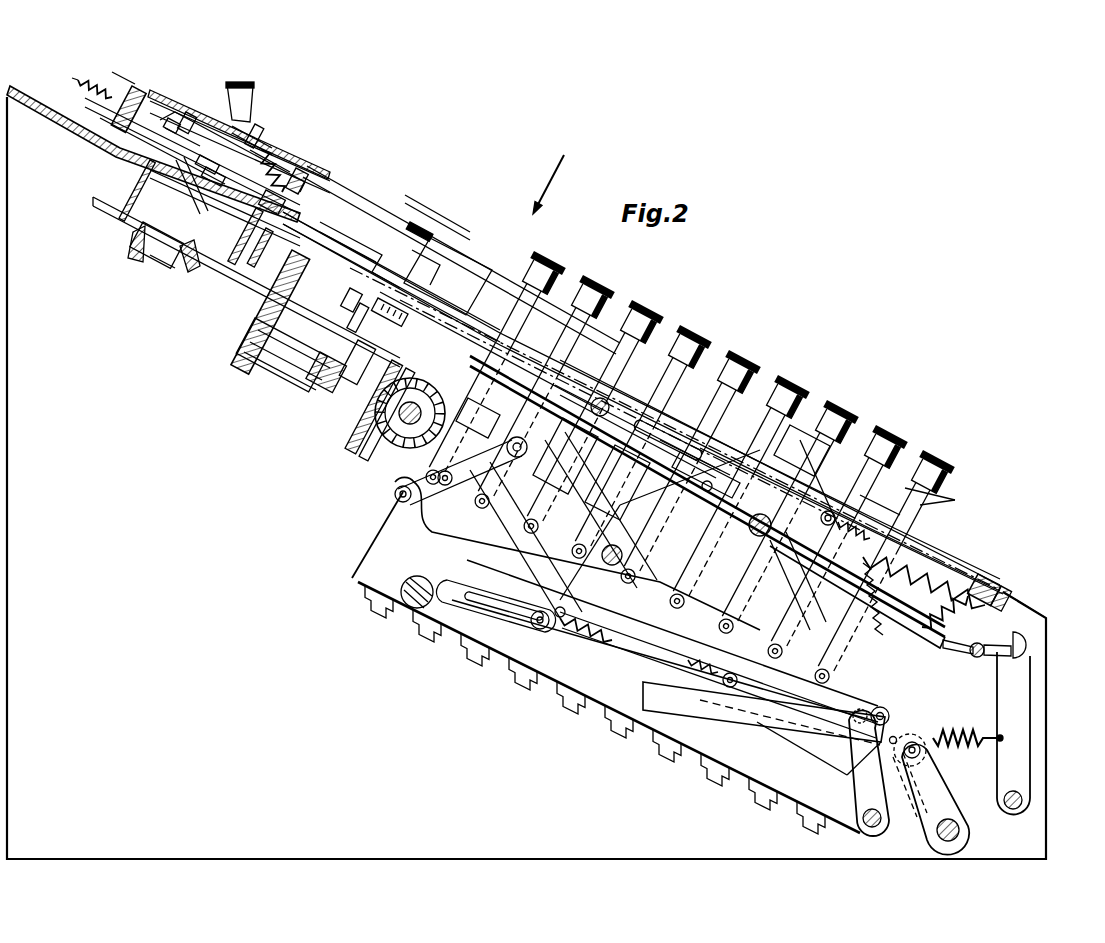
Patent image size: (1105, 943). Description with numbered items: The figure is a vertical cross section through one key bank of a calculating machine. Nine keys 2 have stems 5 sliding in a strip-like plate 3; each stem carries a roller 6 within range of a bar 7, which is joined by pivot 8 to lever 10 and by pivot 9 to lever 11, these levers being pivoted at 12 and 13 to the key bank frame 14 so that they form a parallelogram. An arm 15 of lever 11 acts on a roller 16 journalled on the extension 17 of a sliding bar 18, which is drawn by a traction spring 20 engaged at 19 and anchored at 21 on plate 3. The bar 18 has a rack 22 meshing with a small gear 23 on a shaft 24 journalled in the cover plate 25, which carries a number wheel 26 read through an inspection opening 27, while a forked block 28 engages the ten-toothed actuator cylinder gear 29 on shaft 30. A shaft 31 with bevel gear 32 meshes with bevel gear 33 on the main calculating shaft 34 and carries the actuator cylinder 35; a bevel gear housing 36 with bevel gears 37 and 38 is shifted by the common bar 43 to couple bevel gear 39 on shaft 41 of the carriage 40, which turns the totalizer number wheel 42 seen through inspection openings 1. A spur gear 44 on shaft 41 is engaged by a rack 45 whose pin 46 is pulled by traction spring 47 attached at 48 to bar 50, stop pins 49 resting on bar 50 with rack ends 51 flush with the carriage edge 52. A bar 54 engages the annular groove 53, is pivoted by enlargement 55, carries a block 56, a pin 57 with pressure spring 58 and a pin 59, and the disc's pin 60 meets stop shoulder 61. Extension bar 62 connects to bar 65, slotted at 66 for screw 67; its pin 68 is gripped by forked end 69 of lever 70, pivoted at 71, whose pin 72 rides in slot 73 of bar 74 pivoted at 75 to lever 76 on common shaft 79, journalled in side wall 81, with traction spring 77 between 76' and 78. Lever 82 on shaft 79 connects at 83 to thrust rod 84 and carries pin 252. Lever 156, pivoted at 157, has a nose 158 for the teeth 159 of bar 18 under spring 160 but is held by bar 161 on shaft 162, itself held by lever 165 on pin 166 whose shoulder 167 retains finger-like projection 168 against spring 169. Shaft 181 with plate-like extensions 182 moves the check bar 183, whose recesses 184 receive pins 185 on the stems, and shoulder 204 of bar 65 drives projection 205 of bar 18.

The inspection openings 1 is at (266, 140).
The keys 2 is at (938, 452).
The strip-like plate 3 is at (910, 543).
The key stems 5 is at (936, 497).
The roller 6 is at (452, 478).
The bar 7 is at (530, 596).
The pivot 8 is at (840, 735).
The pivot 9 is at (394, 495).
The lever 10 is at (858, 782).
The lever 11 is at (400, 532).
The pivot 12 is at (862, 820).
The pivot 13 is at (408, 605).
The frame 14 is at (612, 708).
The arm 15 is at (518, 480).
The roller 16 is at (506, 450).
The extension 17 is at (548, 446).
The bar 18 is at (822, 492).
The spring attachment point 19 is at (829, 510).
The traction spring 20 is at (868, 520).
The spring attachment point 21 is at (985, 580).
The rack 22 is at (440, 296).
The small gear 23 is at (378, 256).
The shaft 24 is at (418, 268).
The cover plate 25 is at (367, 199).
The number wheel 26 is at (455, 240).
The inspection opening 27 is at (416, 222).
The forked block 28 is at (356, 302).
The actuator cylinder gear 29 is at (326, 376).
The shaft 30 is at (240, 276).
The shaft 31 is at (352, 378).
The bevel gear 32 is at (366, 438).
The bevel gear 33 is at (372, 462).
The main calculating shaft 34 is at (404, 432).
The actuator cylinders 35 is at (272, 368).
The bevel gear housing 36 is at (170, 262).
The bevel gear 37 is at (190, 272).
The bevel gear 38 is at (134, 250).
The bevel gear 39 is at (158, 205).
The carriage 40 is at (170, 99).
The shaft 41 is at (186, 196).
The number wheel 42 is at (250, 133).
The common bar 43 is at (155, 262).
The spur gear 44 is at (257, 104).
The rack 45 is at (97, 117).
The pin 46 is at (76, 80).
The traction spring 47 is at (127, 71).
The spring attachment point 48 is at (140, 92).
The stop pins 49 is at (60, 112).
The bar 50 is at (172, 92).
The rack ends 51 is at (262, 222).
The longitudinal edge 52 is at (306, 175).
The annular groove 53 is at (214, 180).
The bar 54 is at (143, 156).
The enlargement 55 is at (137, 133).
The small block 56 is at (262, 228).
The pin 57 is at (290, 180).
The pressure spring 58 is at (278, 152).
The pin 59 is at (268, 158).
The pin 60 is at (198, 118).
The stop shoulder 61 is at (176, 132).
The extension bar 62 is at (310, 226).
The bar 65 is at (536, 352).
The slot 66 is at (688, 450).
The attaching screw 67 is at (608, 403).
The pin 68 is at (728, 475).
The forked end 69 is at (707, 491).
The lever 70 is at (680, 500).
The pin 71 is at (624, 555).
The pin 72 is at (536, 630).
The slot 73 is at (480, 597).
The bar 74 is at (618, 650).
The pivot 75 is at (921, 752).
The lever 76 is at (943, 800).
The spring attachment point 76' is at (549, 657).
The traction spring 77 is at (588, 640).
The spring attachment point 78 is at (726, 690).
The common shaft 79 is at (962, 832).
The frame side wall 81 is at (1022, 612).
The lever 82 is at (910, 805).
The connection point 83 is at (888, 711).
The thrust rod 84 is at (736, 722).
The lever 156 is at (796, 558).
The pivot 157 is at (760, 534).
The nose 158 is at (850, 580).
The teeth 159 is at (930, 580).
The traction spring 160 is at (1010, 590).
The bar 161 is at (955, 641).
The shaft 162 is at (982, 645).
The lever 165 is at (1031, 703).
The pin 166 is at (1023, 800).
The shoulder 167 is at (1030, 648).
The finger-like projection 168 is at (992, 657).
The traction spring 169 is at (965, 734).
The shaft 181 is at (396, 316).
The plate-like extensions 182 is at (470, 322).
The check bar 183 is at (577, 470).
The recesses 184 is at (646, 418).
The pins 185 is at (486, 414).
The shoulder 204 is at (596, 378).
The projection 205 is at (588, 372).
The pin 252 is at (897, 736).